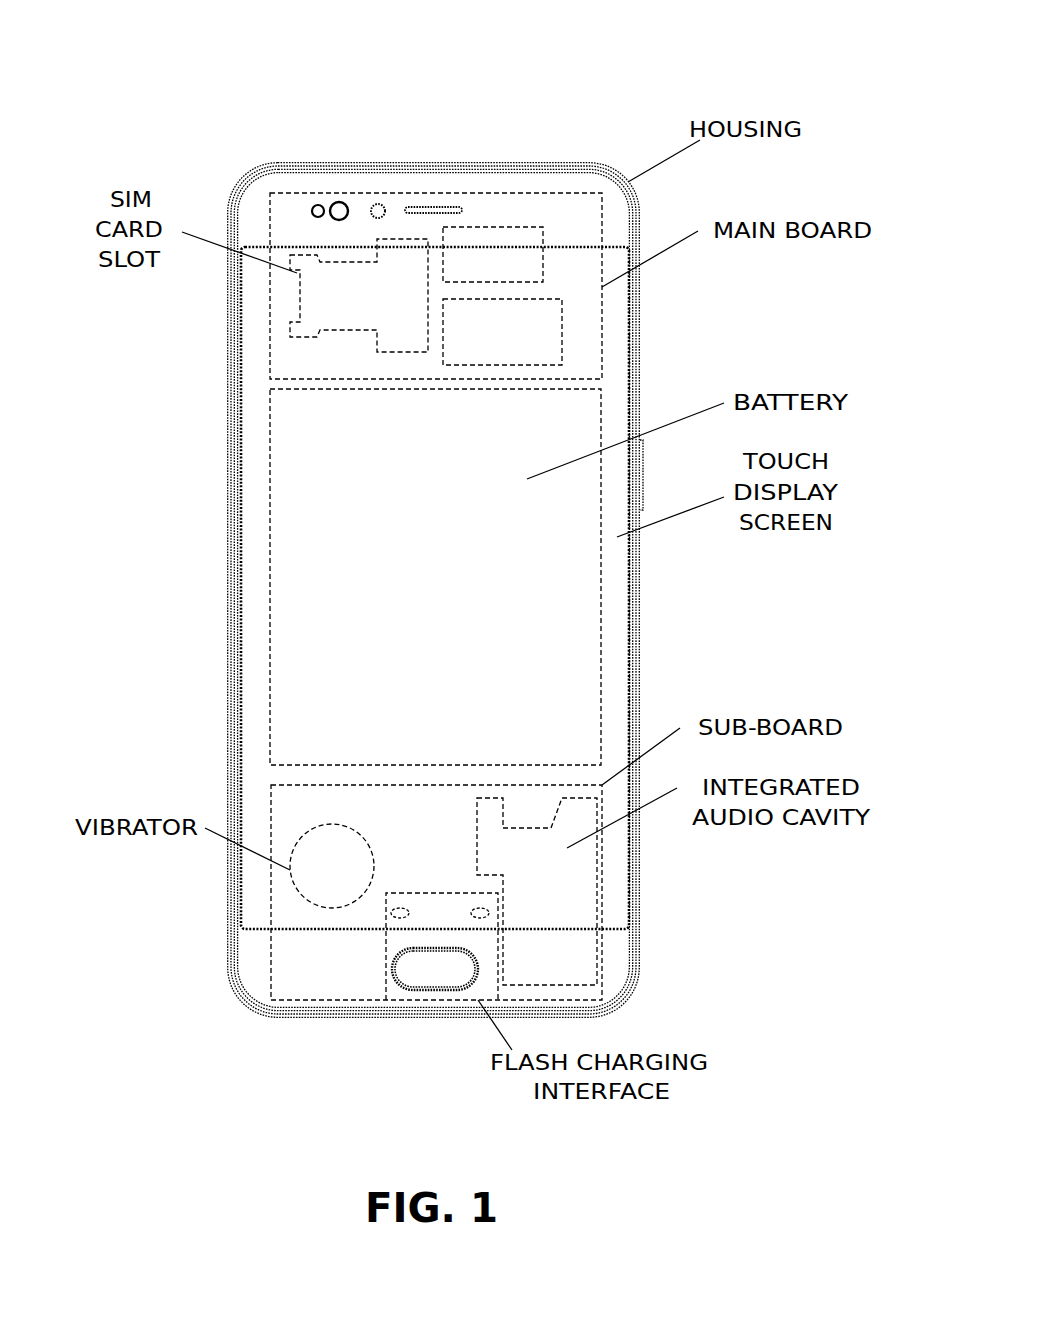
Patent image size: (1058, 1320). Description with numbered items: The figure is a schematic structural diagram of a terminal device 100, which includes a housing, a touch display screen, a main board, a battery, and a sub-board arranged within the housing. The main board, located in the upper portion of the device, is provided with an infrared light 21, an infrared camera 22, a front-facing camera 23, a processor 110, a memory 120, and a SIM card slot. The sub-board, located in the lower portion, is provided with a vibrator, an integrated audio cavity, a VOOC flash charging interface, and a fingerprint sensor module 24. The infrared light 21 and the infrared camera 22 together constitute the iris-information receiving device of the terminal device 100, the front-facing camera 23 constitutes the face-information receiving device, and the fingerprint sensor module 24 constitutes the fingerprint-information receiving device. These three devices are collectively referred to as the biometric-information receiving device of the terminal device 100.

The terminal device 100 is at (500, 75).
The infrared light 21 is at (314, 204).
The infrared camera 22 is at (339, 201).
The front-facing camera 23 is at (382, 204).
The processor 110 is at (480, 227).
The memory 120 is at (562, 338).
The fingerprint sensor module 24 is at (393, 979).